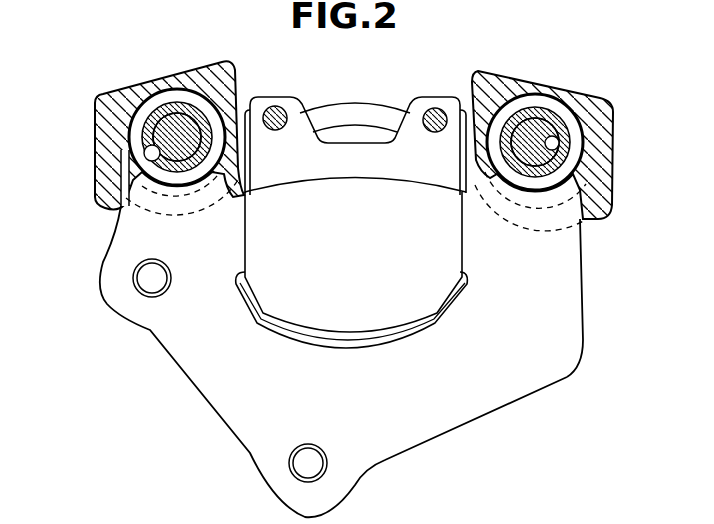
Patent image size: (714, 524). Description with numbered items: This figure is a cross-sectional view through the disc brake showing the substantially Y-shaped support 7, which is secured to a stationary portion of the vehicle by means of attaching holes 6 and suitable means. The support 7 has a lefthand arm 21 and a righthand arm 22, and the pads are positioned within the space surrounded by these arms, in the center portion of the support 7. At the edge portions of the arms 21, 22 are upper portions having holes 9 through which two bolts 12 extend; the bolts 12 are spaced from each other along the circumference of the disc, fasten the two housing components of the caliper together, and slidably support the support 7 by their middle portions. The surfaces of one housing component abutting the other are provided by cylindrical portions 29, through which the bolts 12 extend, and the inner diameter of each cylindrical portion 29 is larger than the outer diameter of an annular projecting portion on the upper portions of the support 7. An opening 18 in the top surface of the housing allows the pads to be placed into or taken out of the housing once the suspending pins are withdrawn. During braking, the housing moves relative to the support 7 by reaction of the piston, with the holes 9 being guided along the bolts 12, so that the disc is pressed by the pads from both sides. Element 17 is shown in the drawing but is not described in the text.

The attaching holes 6 is at (145, 287).
The support 7 is at (224, 362).
The holes 9 is at (150, 160).
The bolts 12 is at (165, 128).
The bolt holes 17 is at (276, 107).
The opening 18 is at (326, 100).
The lefthand arm 21 is at (182, 342).
The righthand arm 22 is at (533, 315).
The cylindrical portions 29 is at (125, 213).